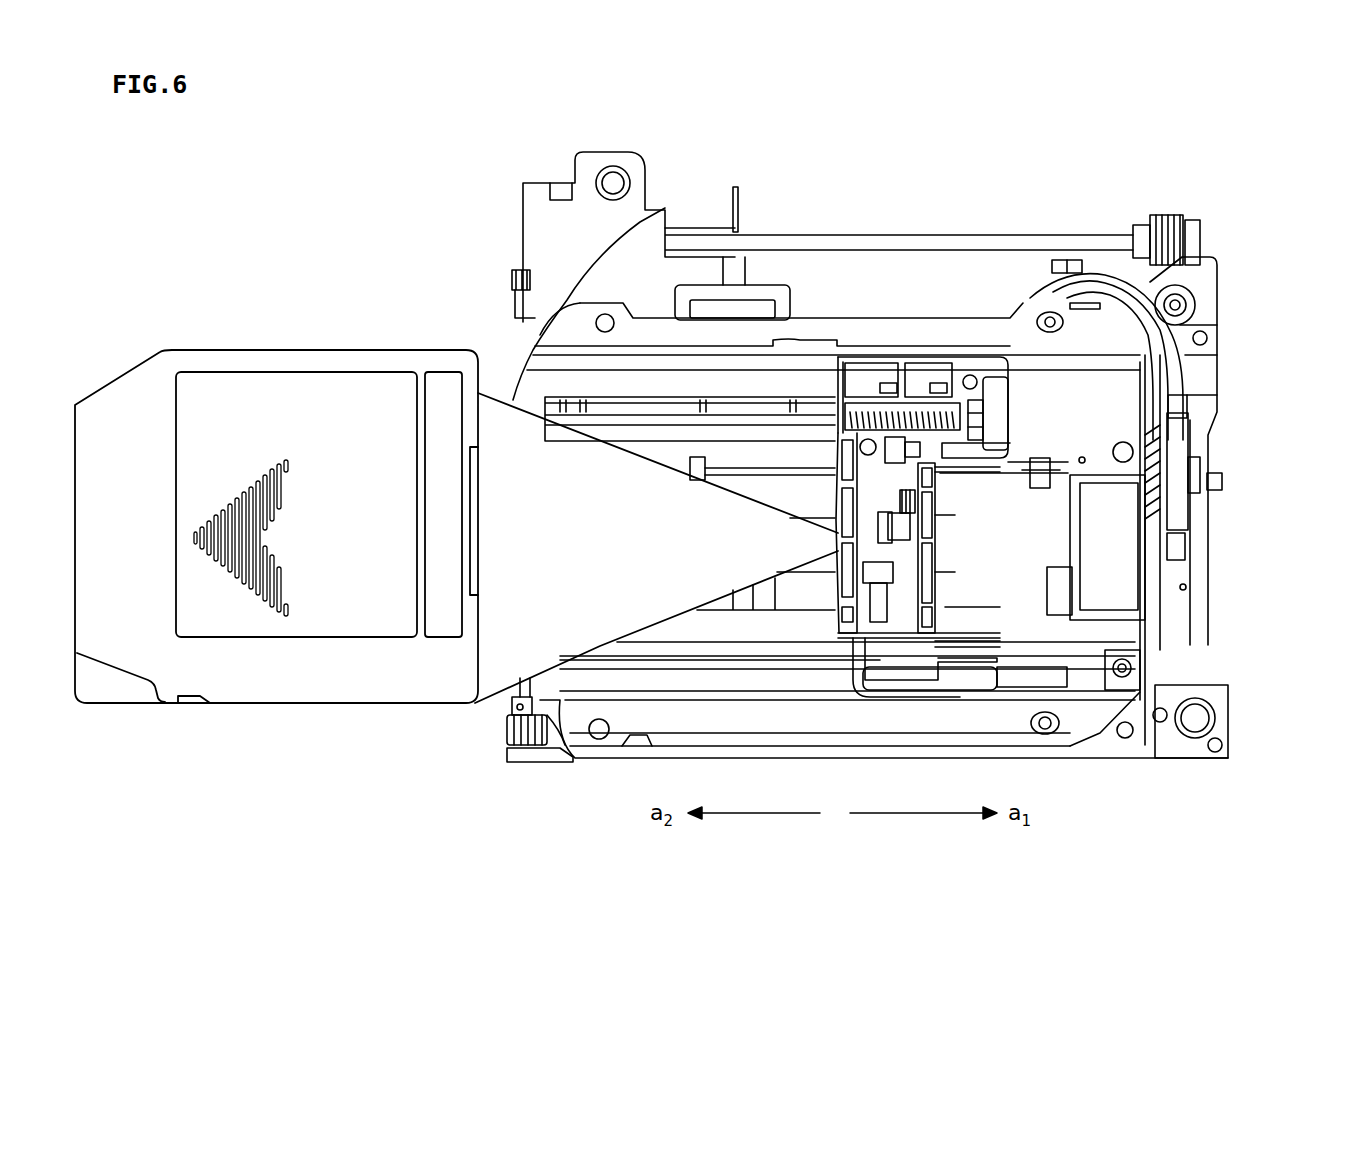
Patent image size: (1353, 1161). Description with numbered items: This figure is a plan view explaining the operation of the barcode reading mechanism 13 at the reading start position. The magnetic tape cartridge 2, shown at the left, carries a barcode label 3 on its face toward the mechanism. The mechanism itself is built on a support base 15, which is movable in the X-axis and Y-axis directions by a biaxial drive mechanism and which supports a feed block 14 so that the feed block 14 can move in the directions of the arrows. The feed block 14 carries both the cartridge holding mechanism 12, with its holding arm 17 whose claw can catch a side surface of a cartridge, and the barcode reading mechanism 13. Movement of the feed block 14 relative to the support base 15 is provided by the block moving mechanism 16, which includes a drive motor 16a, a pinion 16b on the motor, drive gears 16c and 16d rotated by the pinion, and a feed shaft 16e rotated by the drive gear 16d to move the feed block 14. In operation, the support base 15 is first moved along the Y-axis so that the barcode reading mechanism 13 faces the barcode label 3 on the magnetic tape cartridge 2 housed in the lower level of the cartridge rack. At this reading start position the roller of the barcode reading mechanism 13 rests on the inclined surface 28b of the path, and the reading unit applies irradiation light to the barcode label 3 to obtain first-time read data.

The magnetic tape cartridge 2 is at (262, 685).
The barcode label 3 is at (492, 702).
The cartridge holding mechanism 12 is at (885, 337).
The barcode reading mechanism 13 is at (824, 598).
The feed block 14 is at (940, 368).
The support base 15 is at (680, 713).
The block moving mechanism 16 is at (1249, 396).
The drive motor 16a is at (1128, 592).
The pinion 16b is at (1180, 548).
The drive gear 16c is at (1177, 508).
The drive gear 16d is at (1182, 406).
The feed shaft 16e is at (1060, 410).
The holding arm 17 is at (805, 345).
The inclined surface 28b is at (945, 542).